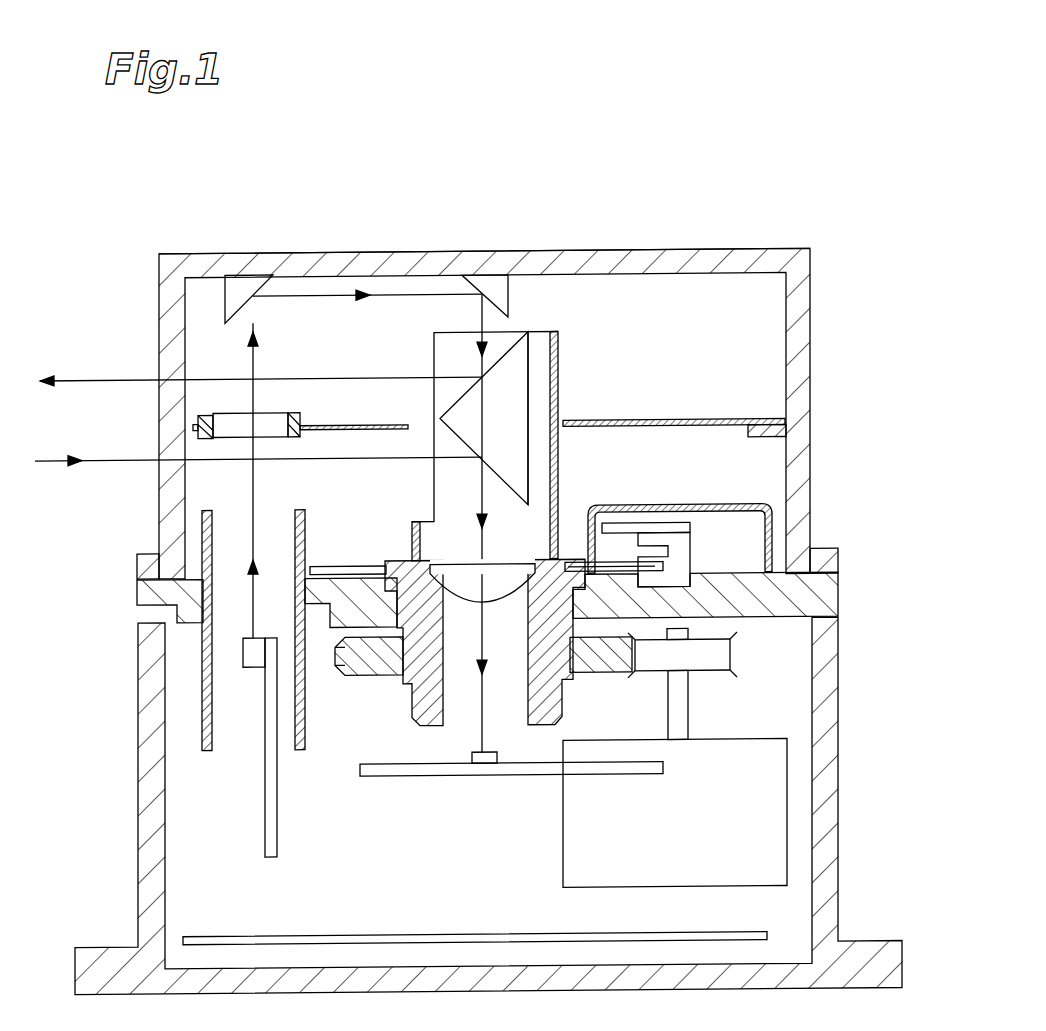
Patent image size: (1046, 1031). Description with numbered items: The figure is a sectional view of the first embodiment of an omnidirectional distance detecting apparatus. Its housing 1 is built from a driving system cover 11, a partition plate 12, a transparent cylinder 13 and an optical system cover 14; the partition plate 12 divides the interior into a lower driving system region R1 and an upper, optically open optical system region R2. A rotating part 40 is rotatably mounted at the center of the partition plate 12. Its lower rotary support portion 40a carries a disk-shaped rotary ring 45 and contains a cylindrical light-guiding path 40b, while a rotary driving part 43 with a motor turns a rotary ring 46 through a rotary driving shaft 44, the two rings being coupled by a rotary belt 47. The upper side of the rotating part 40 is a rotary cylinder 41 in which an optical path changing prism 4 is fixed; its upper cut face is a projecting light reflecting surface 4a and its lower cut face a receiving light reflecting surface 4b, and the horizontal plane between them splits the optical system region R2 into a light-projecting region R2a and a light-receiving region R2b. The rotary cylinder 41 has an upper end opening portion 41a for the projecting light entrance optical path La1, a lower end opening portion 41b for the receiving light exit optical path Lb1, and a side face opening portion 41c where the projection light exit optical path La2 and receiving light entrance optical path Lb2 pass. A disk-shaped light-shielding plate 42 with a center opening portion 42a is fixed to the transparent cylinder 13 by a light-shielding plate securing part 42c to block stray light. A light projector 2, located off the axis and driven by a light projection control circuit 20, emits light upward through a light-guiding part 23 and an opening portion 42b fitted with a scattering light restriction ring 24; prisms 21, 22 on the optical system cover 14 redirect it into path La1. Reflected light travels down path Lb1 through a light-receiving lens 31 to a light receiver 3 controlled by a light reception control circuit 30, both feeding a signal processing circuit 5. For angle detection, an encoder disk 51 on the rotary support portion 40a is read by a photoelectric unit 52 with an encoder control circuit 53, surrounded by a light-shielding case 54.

The housing 1 is at (806, 235).
The light projector 2 is at (253, 660).
The light receiver 3 is at (472, 756).
The optical path changing prism 4 is at (522, 362).
The projecting light reflecting surface 4a is at (460, 398).
The receiving light reflecting surface 4b is at (452, 468).
The signal processing circuit 5 is at (365, 936).
The driving system cover 11 is at (828, 860).
The partition plate 12 is at (836, 596).
The transparent cylinder 13 is at (810, 389).
The optical system cover 14 is at (713, 262).
The light projection control circuit 20 is at (273, 784).
The prism 21 is at (243, 283).
The prism 22 is at (493, 280).
The light-guiding part 23 is at (212, 666).
The scattering light restriction ring 24 is at (227, 416).
The light reception control circuit 30 is at (430, 770).
The light-receiving lens 31 is at (468, 592).
The rotating part 40 is at (580, 463).
The rotary support portion 40a is at (408, 688).
The cylindrical light-guiding path 40b is at (497, 714).
The rotary cylinder 41 is at (560, 393).
The upper end opening portion 41a is at (542, 328).
The lower end opening portion 41b is at (452, 556).
The side face opening portion 41c is at (433, 428).
The light-shielding plate 42 is at (665, 421).
The center opening portion 42a is at (407, 427).
The opening portion 42b is at (300, 426).
The light-shielding plate securing part 42c is at (770, 440).
The rotary driving part 43 is at (569, 823).
The rotary driving shaft 44 is at (683, 717).
The rotary ring 45 is at (611, 665).
The rotary ring 46 is at (718, 628).
The rotary belt 47 is at (694, 660).
The encoder disk 51 is at (342, 563).
The photoelectric unit 52 is at (682, 562).
The encoder control circuit 53 is at (645, 527).
The light-shielding case 54 is at (765, 507).
The driving system region R1 is at (802, 712).
The optical system region R2 is at (680, 292).
The light-projecting region R2a is at (770, 320).
The light-receiving region R2b is at (782, 490).
The projecting light entrance optical path La1 is at (470, 296).
The projection light exit optical path La2 is at (118, 377).
The receiving light exit optical path Lb1 is at (486, 532).
The receiving light entrance optical path Lb2 is at (128, 460).